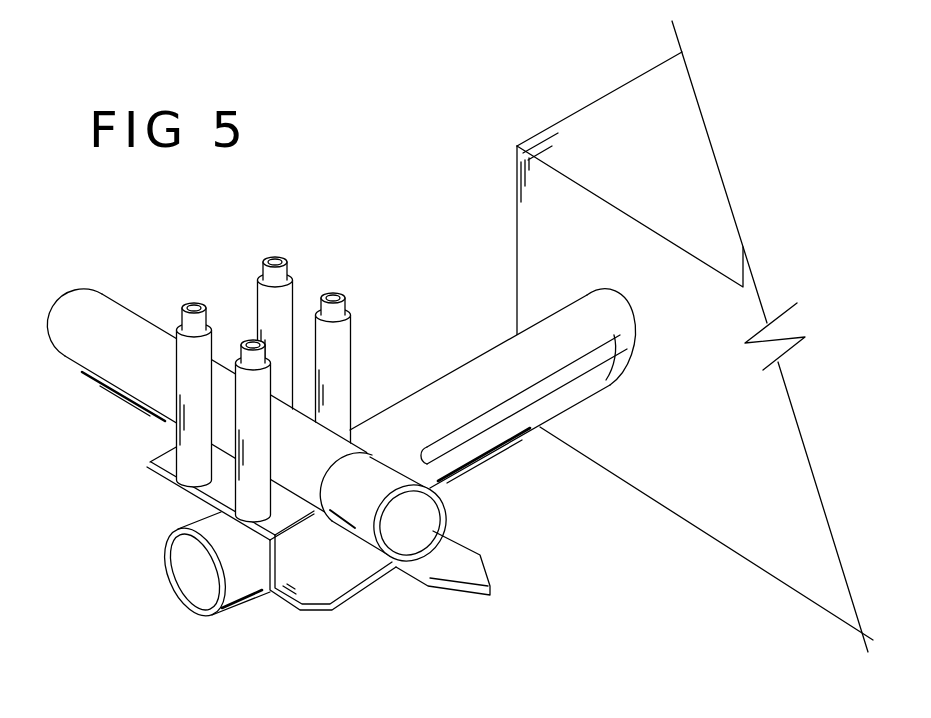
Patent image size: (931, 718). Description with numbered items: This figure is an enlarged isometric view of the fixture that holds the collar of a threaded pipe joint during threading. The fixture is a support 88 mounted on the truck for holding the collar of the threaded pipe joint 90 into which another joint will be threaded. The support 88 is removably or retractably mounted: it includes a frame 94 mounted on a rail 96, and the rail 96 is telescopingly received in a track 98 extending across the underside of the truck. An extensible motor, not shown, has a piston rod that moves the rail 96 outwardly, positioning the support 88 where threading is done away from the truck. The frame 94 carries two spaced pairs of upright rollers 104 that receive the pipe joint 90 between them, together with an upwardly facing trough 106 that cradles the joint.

The support 88 is at (444, 251).
The threaded pipe joint 90 is at (90, 300).
The frame 94 is at (147, 467).
The rail 96 is at (237, 597).
The track 98 is at (556, 306).
The upright rollers 104 is at (258, 312).
The trough 106 is at (478, 566).